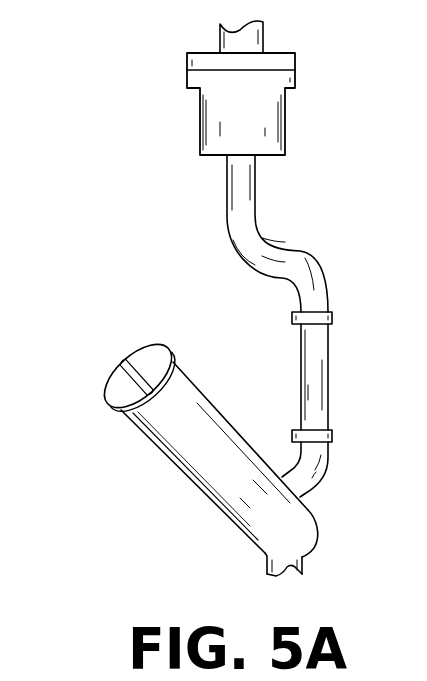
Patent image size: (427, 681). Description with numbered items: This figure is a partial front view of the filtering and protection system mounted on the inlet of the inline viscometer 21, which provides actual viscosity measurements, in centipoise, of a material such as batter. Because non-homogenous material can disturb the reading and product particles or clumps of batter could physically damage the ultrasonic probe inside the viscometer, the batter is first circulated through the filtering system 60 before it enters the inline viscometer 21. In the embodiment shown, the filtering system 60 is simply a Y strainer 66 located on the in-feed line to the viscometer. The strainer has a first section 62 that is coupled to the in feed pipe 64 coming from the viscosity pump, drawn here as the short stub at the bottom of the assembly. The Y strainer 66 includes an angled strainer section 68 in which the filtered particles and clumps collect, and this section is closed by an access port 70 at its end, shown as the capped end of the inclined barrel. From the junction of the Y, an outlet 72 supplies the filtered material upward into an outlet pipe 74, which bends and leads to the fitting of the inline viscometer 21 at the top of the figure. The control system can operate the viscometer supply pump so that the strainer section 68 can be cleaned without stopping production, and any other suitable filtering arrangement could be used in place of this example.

The inline viscometer 21 is at (291, 117).
The filtering system 60 is at (155, 502).
The first section 62 is at (265, 555).
The in feed pipe 64 is at (284, 581).
The Y strainer 66 is at (214, 396).
The strainer section 68 is at (158, 447).
The access port 70 is at (108, 383).
The outlet 72 is at (322, 472).
The outlet pipe 74 is at (330, 395).